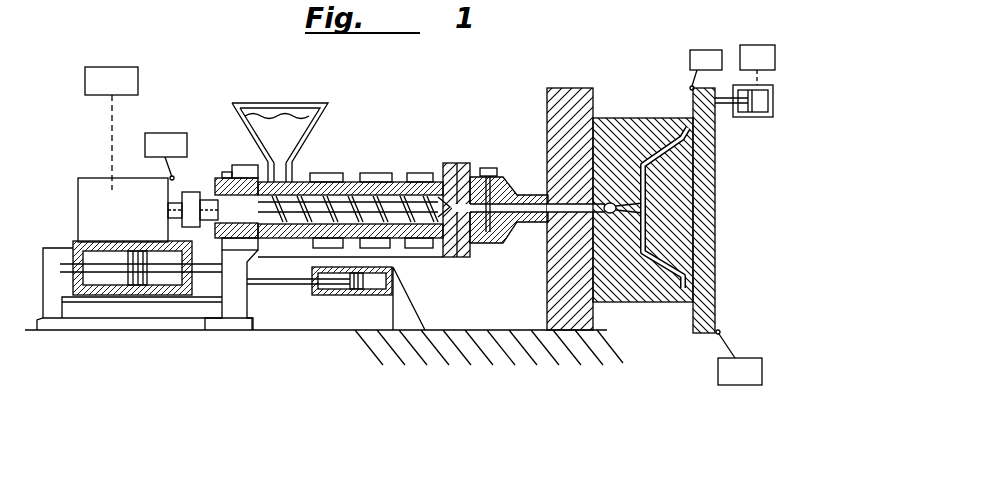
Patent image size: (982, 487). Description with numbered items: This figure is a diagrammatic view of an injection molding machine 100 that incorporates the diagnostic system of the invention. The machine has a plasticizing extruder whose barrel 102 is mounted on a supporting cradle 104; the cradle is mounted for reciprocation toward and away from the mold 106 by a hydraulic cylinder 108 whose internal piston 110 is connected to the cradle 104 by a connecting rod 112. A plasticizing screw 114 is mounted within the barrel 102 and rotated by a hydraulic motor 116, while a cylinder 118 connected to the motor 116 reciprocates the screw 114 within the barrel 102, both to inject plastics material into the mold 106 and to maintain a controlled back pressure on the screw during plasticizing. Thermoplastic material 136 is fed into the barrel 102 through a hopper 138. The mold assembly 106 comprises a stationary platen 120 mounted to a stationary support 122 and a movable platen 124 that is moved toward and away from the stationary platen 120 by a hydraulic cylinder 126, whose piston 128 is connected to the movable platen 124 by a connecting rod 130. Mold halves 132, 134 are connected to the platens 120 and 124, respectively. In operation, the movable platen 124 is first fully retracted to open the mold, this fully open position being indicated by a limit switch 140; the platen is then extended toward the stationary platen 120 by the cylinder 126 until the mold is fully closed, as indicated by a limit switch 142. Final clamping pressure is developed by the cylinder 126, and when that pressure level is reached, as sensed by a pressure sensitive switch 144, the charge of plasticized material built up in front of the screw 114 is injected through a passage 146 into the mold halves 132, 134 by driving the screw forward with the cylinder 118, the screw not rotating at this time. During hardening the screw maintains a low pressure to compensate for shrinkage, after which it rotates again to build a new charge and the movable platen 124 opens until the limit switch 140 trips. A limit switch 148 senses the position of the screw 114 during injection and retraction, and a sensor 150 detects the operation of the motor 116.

The injection molding machine 100 is at (381, 104).
The barrel 102 is at (388, 182).
The supporting cradle 104 is at (233, 308).
The mold 106 is at (618, 335).
The hydraulic cylinder 108 is at (358, 295).
The piston 110 is at (340, 300).
The connecting rod 112 is at (302, 284).
The plasticizing screw 114 is at (333, 182).
The hydraulic motor 116 is at (78, 205).
The cylinder 118 is at (108, 298).
The stationary platen 120 is at (558, 88).
The stationary support 122 is at (490, 352).
The movable platen 124 is at (716, 208).
The hydraulic cylinder 126 is at (760, 118).
The piston 128 is at (747, 112).
The connecting rod 130 is at (724, 98).
The mold half 132 is at (640, 302).
The mold half 134 is at (685, 290).
The thermoplastic material 136 is at (258, 118).
The hopper 138 is at (308, 100).
The limit switch 140 is at (733, 385).
The limit switch 142 is at (700, 50).
The pressure sensitive switch 144 is at (758, 46).
The passage 146 is at (547, 260).
The limit switch 148 is at (160, 133).
The sensor 150 is at (85, 72).